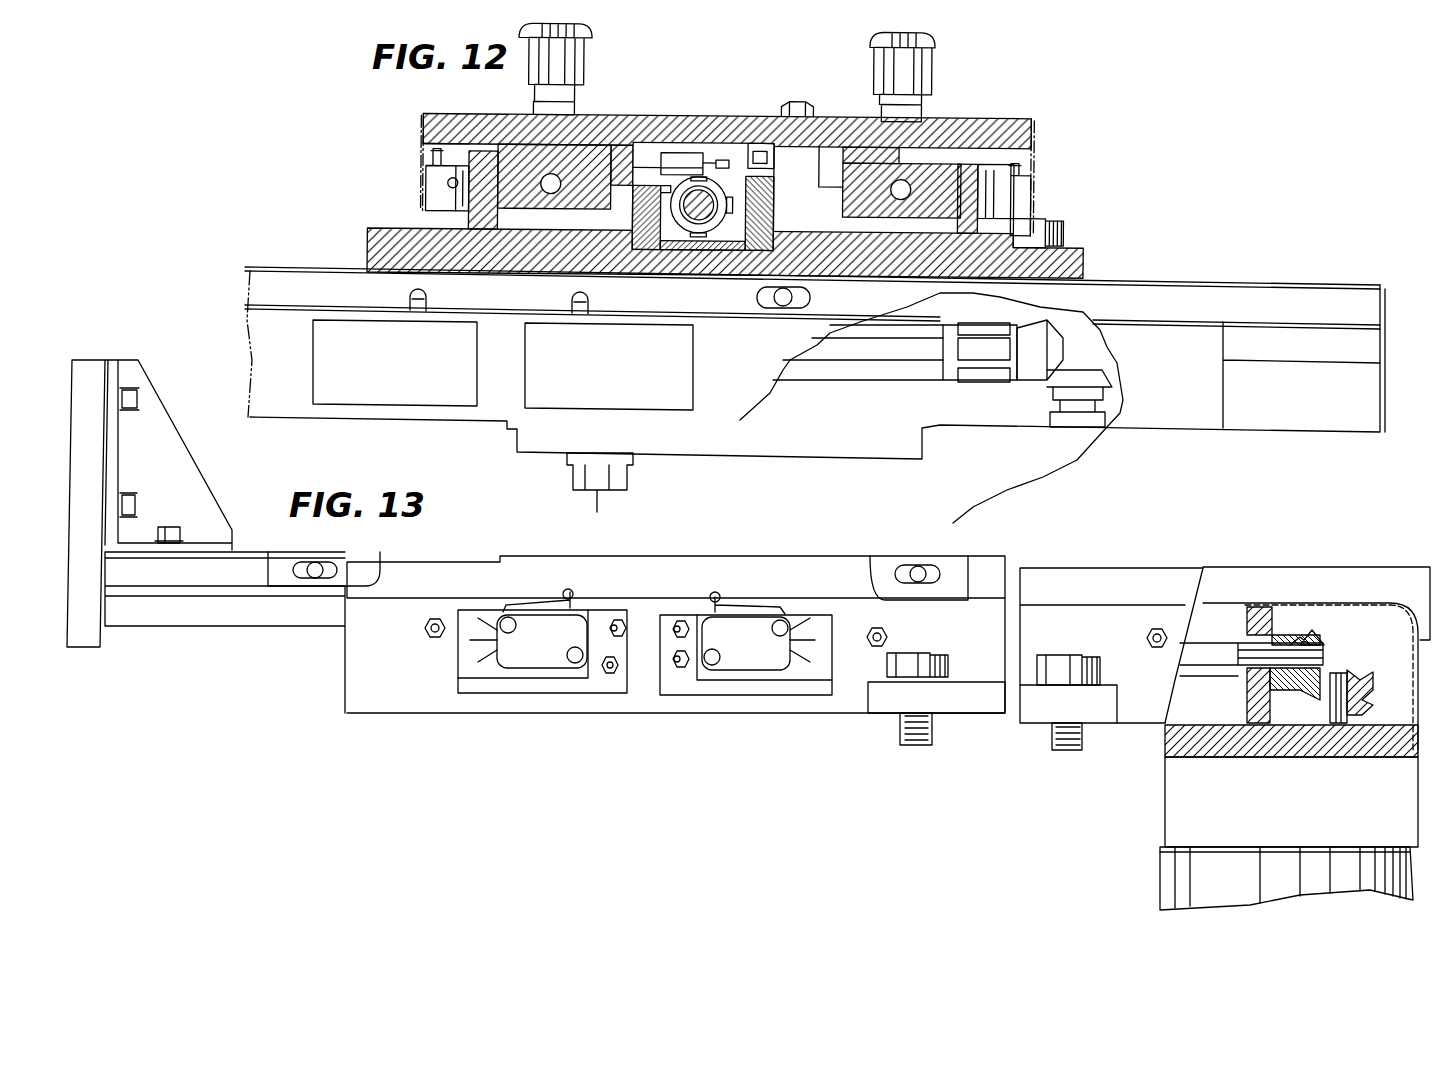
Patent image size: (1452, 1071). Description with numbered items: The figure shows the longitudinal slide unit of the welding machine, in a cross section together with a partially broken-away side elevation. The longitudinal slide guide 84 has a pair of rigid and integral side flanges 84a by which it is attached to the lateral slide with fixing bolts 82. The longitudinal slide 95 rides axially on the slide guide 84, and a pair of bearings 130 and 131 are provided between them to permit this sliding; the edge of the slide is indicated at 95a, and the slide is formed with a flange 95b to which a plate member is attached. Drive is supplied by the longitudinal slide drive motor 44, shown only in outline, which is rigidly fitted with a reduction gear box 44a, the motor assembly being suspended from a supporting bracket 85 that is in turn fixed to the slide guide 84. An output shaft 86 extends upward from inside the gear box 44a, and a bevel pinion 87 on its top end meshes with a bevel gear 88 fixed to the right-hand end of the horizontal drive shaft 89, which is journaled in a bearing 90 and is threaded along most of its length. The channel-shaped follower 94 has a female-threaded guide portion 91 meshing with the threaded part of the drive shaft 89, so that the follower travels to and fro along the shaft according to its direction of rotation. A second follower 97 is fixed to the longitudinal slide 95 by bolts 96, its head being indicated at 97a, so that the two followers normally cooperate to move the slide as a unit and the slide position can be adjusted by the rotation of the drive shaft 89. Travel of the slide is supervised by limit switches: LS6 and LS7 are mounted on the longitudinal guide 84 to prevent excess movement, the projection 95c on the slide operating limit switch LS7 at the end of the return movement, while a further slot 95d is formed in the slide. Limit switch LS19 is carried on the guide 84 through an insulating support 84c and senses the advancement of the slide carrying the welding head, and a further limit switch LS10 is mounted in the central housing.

In FIG. 12, the longitudinal slide guide 84 is at (855, 277).
In FIG. 13, the longitudinal slide guide 84 is at (695, 710).
In FIG. 12, the side flange 84a is at (372, 245).
In FIG. 13, the side flange 84a is at (880, 705).
In FIG. 12, the insulating support 84c is at (1000, 210).
In FIG. 12, the fixing bolt 82 is at (1063, 227).
In FIG. 13, the fixing bolt 82 is at (948, 665).
In FIG. 12, the longitudinal slide 95 is at (612, 113).
In FIG. 12, the plate side edge 95a is at (422, 128).
In FIG. 13, the flange 95b is at (90, 640).
In FIG. 13, the projection 95c is at (335, 580).
In FIG. 13, the slot 95d is at (948, 595).
In FIG. 12, the bolt 96 is at (806, 100).
In FIG. 12, the second follower 97 is at (732, 155).
In FIG. 12, the pin head 97a is at (760, 160).
In FIG. 12, the follower 94 is at (680, 165).
In FIG. 12, the limit switch LS10 is at (670, 155).
In FIG. 12, the limit switch LS6 is at (425, 186).
In FIG. 13, the limit switch LS6 is at (750, 657).
In FIG. 13, the limit switch LS7 is at (527, 655).
In FIG. 12, the limit switch LS19 is at (1025, 185).
In FIG. 12, the bearing 131 is at (560, 182).
In FIG. 12, the bearing 130 is at (890, 183).
In FIG. 12, the drive shaft 89 is at (773, 235).
In FIG. 13, the drive shaft 89 is at (1210, 648).
In FIG. 12, the female-threaded guide portion 91 is at (773, 195).
In FIG. 13, the bevel gear 88 is at (1315, 632).
In FIG. 13, the bevel pinion 87 is at (1362, 678).
In FIG. 13, the bearing 90 is at (1245, 685).
In FIG. 13, the output shaft 86 is at (1335, 720).
In FIG. 13, the supporting bracket 85 is at (1355, 750).
In FIG. 13, the reduction gear box 44a is at (1167, 785).
In FIG. 13, the longitudinal slide drive motor 44 is at (1160, 860).